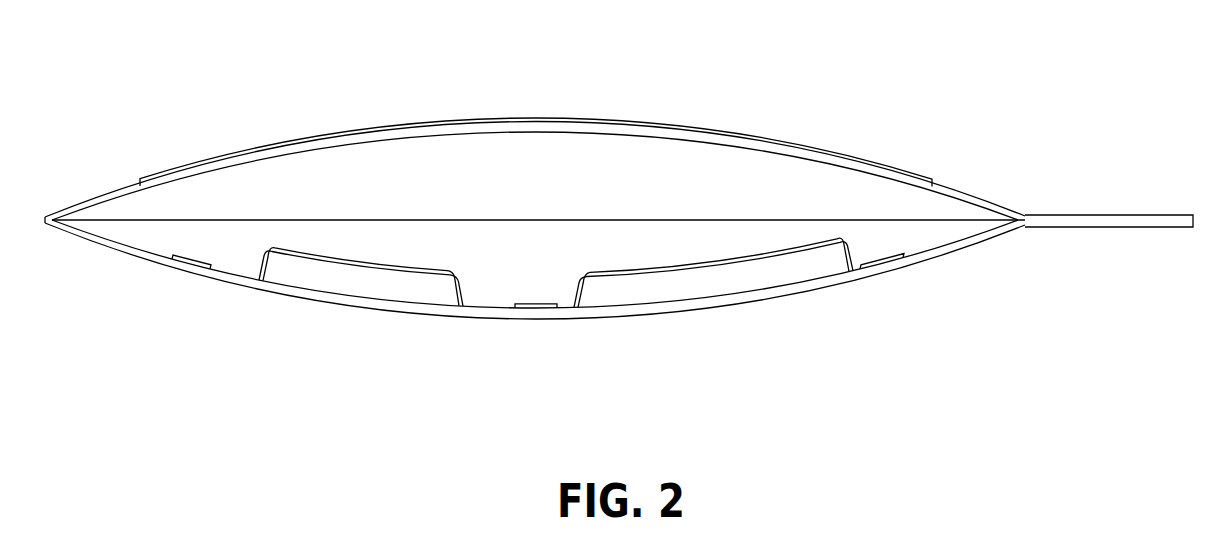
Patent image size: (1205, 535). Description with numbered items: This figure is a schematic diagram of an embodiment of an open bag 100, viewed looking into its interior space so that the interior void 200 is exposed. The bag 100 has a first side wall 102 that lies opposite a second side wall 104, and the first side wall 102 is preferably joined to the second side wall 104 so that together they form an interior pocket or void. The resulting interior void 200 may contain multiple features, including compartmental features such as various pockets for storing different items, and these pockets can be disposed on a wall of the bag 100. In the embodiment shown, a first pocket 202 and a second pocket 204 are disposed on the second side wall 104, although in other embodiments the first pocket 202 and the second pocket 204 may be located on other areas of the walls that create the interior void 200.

The bag 100 is at (366, 95).
The first side wall 102 is at (968, 193).
The second side wall 104 is at (960, 250).
The interior void 200 is at (693, 170).
The first pocket 202 is at (350, 283).
The second pocket 204 is at (722, 285).